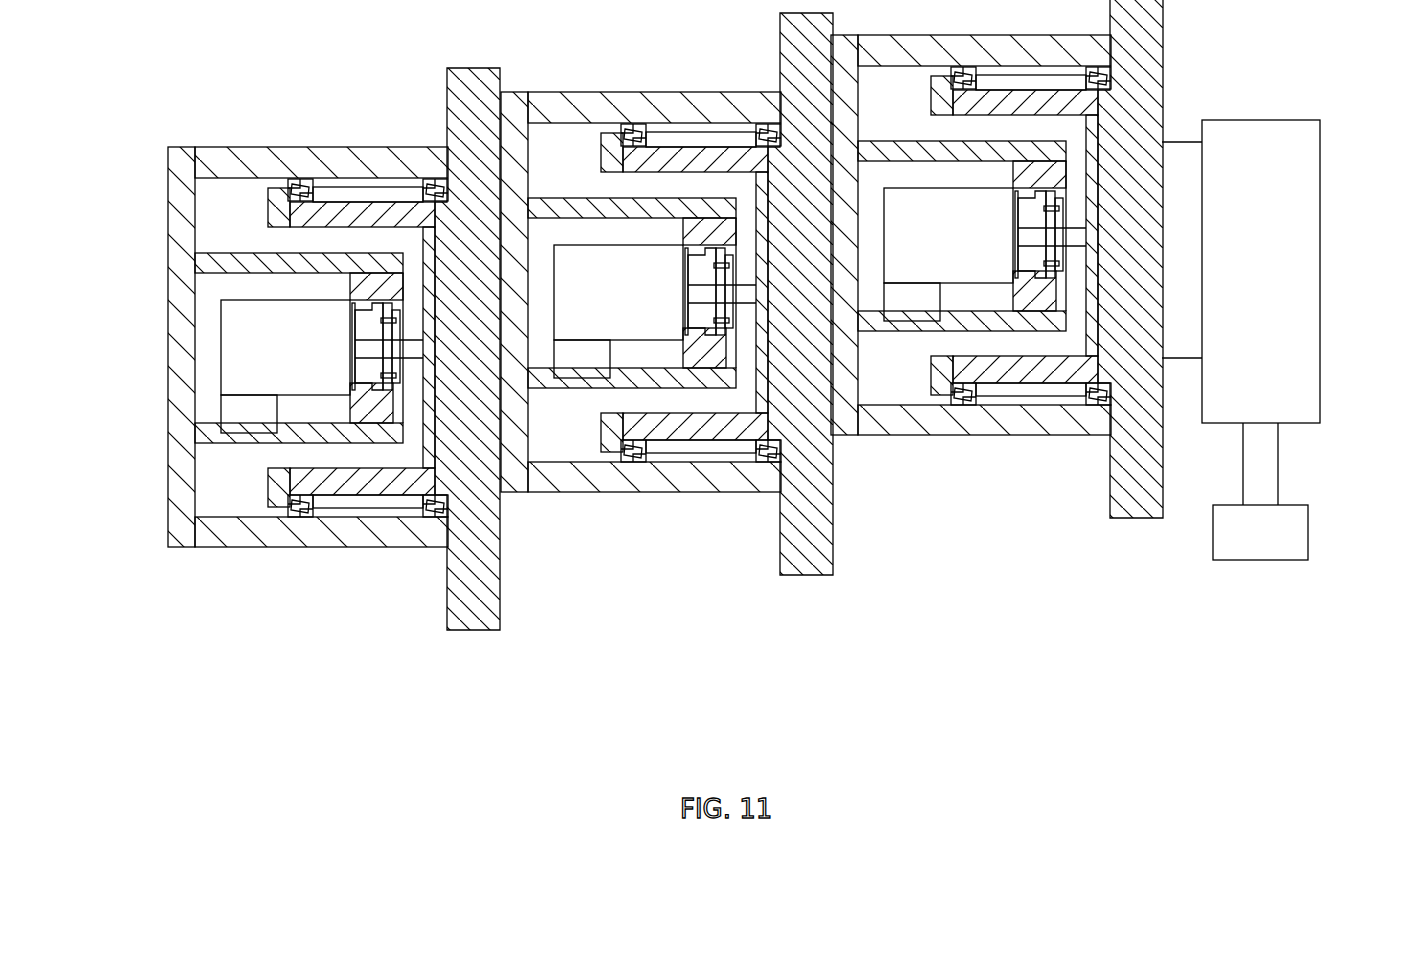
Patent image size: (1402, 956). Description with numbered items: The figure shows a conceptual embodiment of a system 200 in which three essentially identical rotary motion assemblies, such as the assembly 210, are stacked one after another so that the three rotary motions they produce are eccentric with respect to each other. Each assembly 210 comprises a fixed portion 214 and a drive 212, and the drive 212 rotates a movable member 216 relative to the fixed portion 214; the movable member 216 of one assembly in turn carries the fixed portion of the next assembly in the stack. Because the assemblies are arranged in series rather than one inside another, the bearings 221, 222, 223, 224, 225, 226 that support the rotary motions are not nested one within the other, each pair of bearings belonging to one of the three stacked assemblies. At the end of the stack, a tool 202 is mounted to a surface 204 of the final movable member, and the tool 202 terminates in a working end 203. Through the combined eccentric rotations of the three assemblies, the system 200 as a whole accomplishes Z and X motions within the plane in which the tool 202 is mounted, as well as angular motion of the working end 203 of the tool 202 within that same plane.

The system 200 is at (729, 367).
The tool 202 is at (1297, 408).
The working end 203 is at (1261, 553).
The surface 204 is at (1116, 286).
The rotary motion assembly 210 is at (336, 346).
The drive 212 is at (227, 368).
The fixed portion 214 is at (175, 522).
The movable member 216 is at (453, 97).
The bearing 221 is at (292, 512).
The bearing 222 is at (443, 507).
The bearing 223 is at (683, 491).
The bearing 224 is at (827, 467).
The bearing 225 is at (930, 454).
The bearing 226 is at (1068, 434).